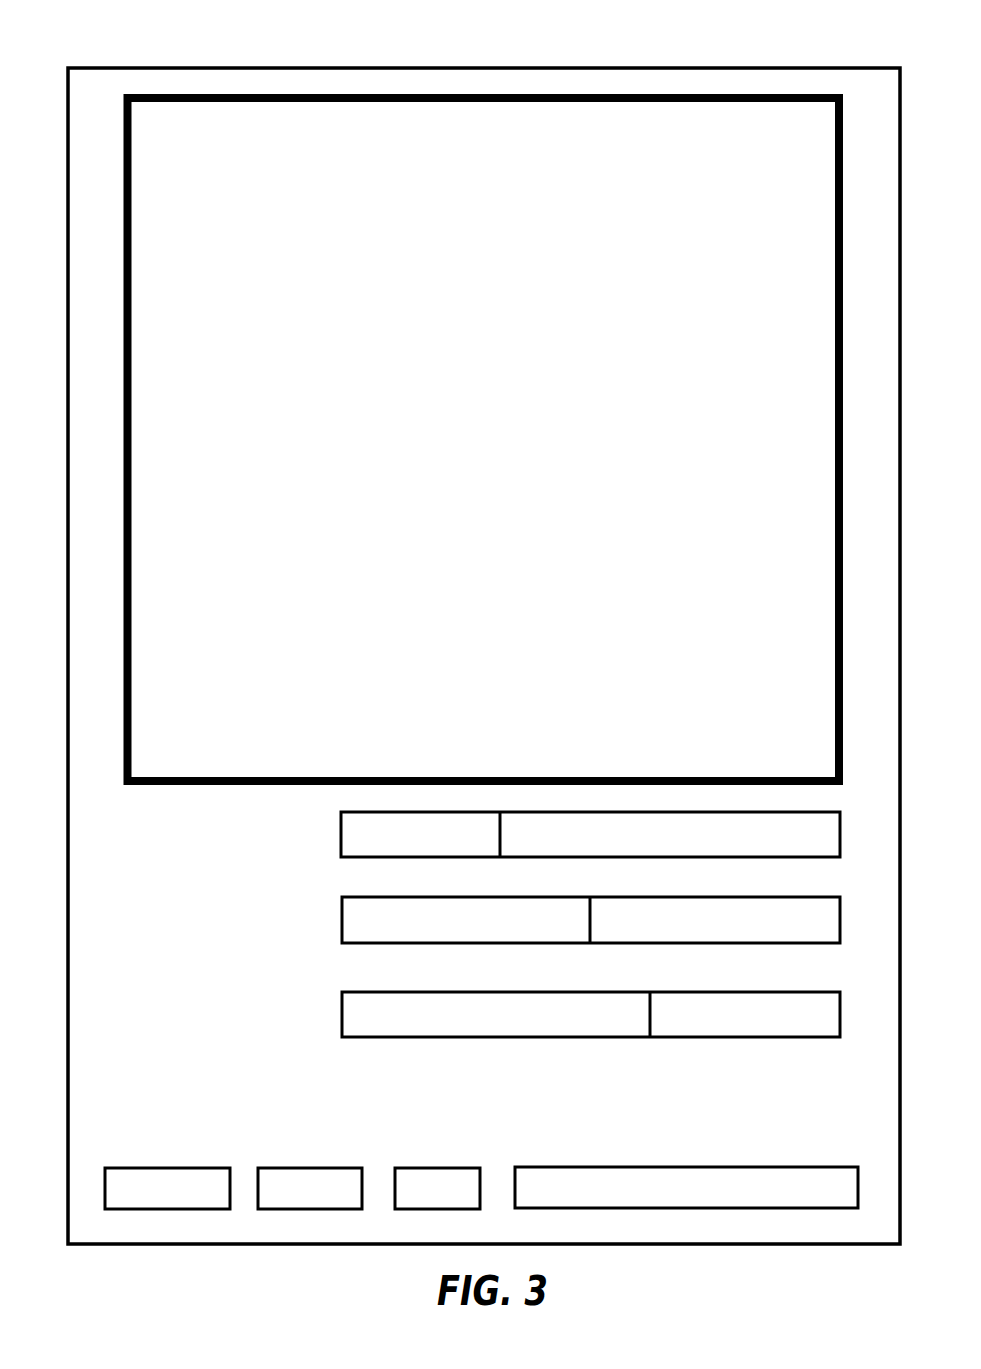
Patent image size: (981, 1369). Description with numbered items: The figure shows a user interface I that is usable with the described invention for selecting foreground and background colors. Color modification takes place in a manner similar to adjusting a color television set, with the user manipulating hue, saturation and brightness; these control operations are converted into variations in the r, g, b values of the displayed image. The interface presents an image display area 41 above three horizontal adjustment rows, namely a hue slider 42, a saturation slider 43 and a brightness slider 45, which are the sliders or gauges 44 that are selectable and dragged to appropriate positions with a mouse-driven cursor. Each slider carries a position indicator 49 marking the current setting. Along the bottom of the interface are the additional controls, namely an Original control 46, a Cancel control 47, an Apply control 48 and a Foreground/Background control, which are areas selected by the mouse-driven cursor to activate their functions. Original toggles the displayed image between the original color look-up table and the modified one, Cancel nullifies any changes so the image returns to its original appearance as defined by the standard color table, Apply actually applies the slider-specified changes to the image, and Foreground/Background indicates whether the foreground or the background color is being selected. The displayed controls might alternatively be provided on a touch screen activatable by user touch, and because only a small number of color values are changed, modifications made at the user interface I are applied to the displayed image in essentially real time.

The user interface I is at (347, 67).
The image display area 41 is at (597, 94).
The hue slider 42 is at (340, 830).
The saturation slider 43 is at (342, 900).
The brightness slider 45 is at (342, 997).
The Foreground/Background control 49 is at (500, 857).
The Original control 46 is at (195, 1168).
The Cancel control 47 is at (330, 1168).
The Apply control 48 is at (462, 1168).
The sliders or gauges 44 is at (582, 1167).